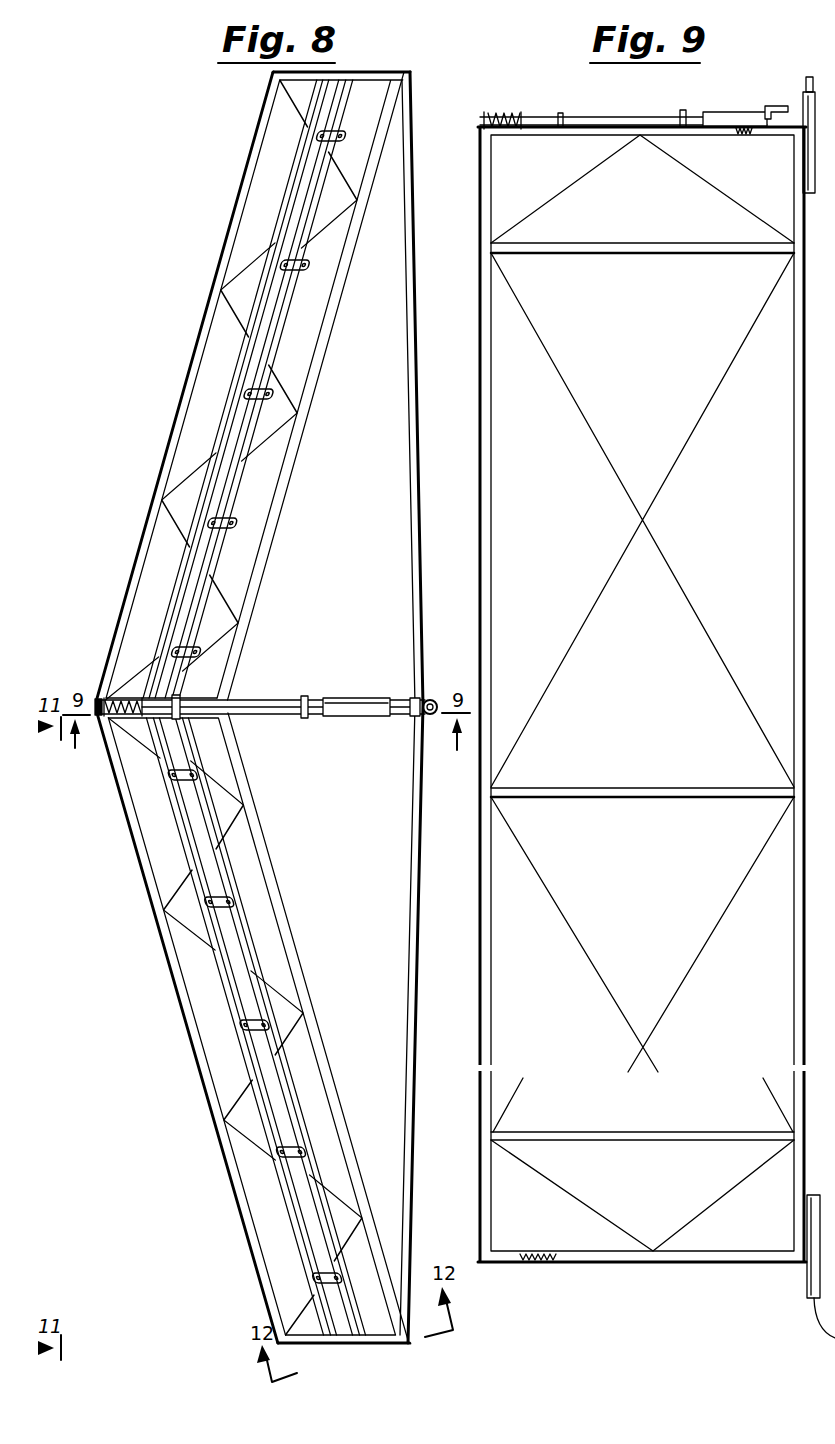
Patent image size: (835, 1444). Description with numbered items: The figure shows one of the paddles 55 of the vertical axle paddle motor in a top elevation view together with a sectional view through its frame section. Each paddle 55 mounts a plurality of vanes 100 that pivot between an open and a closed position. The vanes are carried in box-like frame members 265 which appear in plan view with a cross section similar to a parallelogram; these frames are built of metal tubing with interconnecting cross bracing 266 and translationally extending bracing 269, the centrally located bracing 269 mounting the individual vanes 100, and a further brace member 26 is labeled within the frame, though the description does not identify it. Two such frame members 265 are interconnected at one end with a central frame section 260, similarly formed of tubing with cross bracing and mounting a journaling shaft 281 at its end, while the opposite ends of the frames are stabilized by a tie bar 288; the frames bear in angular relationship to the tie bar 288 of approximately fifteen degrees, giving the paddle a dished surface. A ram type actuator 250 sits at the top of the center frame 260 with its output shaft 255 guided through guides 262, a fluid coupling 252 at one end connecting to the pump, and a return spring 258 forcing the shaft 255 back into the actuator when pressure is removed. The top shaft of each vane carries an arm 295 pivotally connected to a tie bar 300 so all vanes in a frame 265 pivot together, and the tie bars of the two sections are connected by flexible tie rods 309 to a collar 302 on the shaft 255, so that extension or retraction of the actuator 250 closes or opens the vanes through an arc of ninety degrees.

In FIG. 8, the brace member 26 is at (240, 1095).
In FIG. 8, the paddle 55 is at (125, 906).
In FIG. 8, the vane 100 is at (275, 1113).
In FIG. 8, the ram type actuator 250 is at (348, 702).
In FIG. 9, the ram type actuator 250 is at (715, 112).
In FIG. 8, the fluid coupling 252 is at (407, 705).
In FIG. 9, the fluid coupling 252 is at (770, 105).
In FIG. 8, the output shaft 255 is at (267, 703).
In FIG. 9, the output shaft 255 is at (615, 113).
In FIG. 8, the return spring 258 is at (100, 697).
In FIG. 9, the return spring 258 is at (505, 113).
In FIG. 8, the center panel 260 is at (290, 700).
In FIG. 9, the center panel 260 is at (482, 165).
In FIG. 8, the guide 262 is at (305, 715).
In FIG. 8, the box-like frame member 265 is at (190, 1031).
In FIG. 9, the cross bracing 266 is at (738, 888).
In FIG. 8, the translationally extending bracing 269 is at (295, 1226).
In FIG. 9, the journaling shaft 281 is at (805, 105).
In FIG. 8, the tie bar 288 is at (406, 400).
In FIG. 8, the arm 295 is at (232, 903).
In FIG. 8, the tie bar 300 is at (300, 1062).
In FIG. 8, the collar 302 is at (180, 717).
In FIG. 8, the flexible tie rod 309 is at (165, 647).